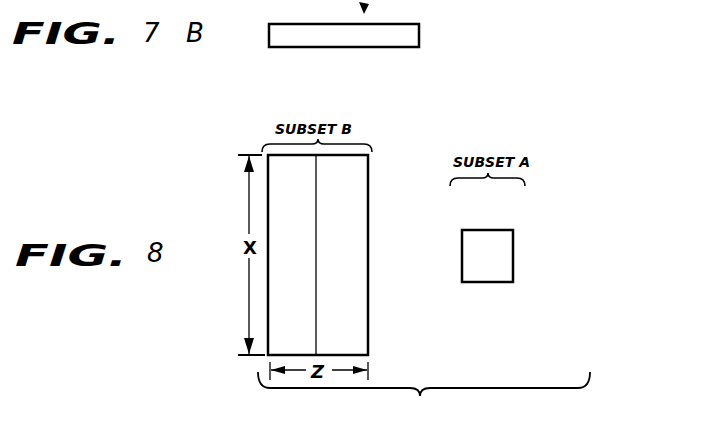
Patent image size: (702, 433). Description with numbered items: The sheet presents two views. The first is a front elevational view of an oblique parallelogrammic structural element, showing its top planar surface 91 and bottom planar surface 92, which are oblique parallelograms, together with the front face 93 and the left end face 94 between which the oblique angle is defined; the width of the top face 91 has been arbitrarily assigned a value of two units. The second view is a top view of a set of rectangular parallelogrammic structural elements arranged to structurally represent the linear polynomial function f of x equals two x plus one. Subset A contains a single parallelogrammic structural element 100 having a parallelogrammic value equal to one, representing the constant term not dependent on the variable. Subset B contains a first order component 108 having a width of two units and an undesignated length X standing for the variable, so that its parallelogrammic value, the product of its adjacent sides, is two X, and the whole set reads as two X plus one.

In FIG. 7B, the top planar surface 91 is at (412, 24).
In FIG. 7B, the bottom planar surface 92 is at (413, 47).
In FIG. 7B, the front face 93 is at (390, 38).
In FIG. 7B, the left end face 94 is at (248, 0).
In FIG. 8, the parallelogrammic structural element 100 is at (503, 258).
In FIG. 8, the first order component 108 is at (369, 330).